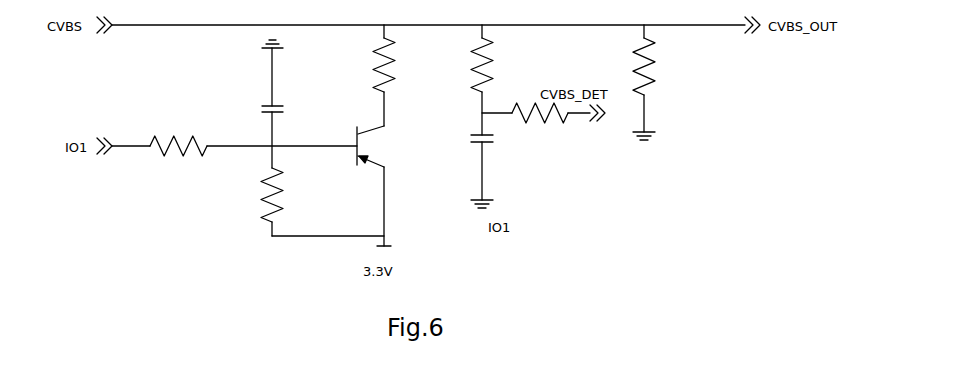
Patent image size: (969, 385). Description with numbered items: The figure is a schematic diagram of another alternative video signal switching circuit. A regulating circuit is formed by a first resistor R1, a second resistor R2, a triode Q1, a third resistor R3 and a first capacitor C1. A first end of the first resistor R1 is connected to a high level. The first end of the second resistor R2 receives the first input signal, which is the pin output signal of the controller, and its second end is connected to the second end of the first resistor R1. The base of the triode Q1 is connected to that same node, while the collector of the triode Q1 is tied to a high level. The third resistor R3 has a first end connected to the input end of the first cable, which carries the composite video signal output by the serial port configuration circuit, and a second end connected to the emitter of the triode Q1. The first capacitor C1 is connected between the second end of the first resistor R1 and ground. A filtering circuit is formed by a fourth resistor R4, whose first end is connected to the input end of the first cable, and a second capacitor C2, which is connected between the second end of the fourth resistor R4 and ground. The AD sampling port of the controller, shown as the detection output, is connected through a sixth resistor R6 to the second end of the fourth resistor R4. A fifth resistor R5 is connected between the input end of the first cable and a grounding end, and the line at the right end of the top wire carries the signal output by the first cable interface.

The first resistor R1 is at (261, 202).
The second resistor R2 is at (178, 137).
The third resistor R3 is at (369, 75).
The fourth resistor R4 is at (496, 80).
The fifth resistor R5 is at (661, 78).
The resistor R6 is at (536, 125).
The first capacitor C1 is at (281, 137).
The second capacitor C2 is at (468, 167).
The triode Q1 is at (377, 146).